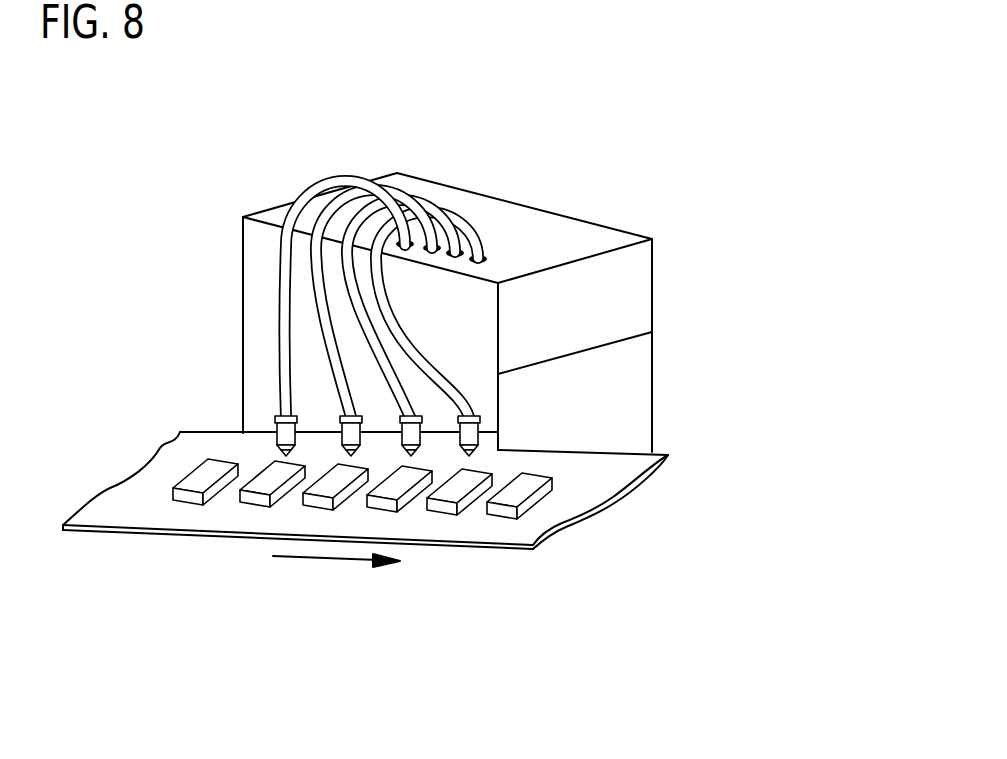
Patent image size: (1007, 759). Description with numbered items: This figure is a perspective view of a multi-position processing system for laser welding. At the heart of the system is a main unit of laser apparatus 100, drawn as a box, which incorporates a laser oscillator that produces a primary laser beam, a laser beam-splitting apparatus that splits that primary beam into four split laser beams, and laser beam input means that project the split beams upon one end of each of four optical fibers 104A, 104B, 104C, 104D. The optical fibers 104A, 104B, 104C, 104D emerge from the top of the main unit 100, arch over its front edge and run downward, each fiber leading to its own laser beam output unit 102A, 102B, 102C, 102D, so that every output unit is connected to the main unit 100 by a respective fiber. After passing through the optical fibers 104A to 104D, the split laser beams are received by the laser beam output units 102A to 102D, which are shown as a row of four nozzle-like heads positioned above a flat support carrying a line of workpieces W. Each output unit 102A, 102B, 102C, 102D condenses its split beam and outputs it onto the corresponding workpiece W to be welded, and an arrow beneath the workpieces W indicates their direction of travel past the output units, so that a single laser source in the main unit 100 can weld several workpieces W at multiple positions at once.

The main unit of laser apparatus 100 is at (593, 235).
The laser beam output unit 102A is at (276, 422).
The laser beam output unit 102B is at (340, 420).
The laser beam output unit 102C is at (422, 432).
The laser beam output unit 102D is at (482, 430).
The optical fiber 104A is at (280, 287).
The optical fiber 104B is at (320, 212).
The optical fiber 104C is at (345, 195).
The optical fiber 104D is at (468, 208).
The workpiece W is at (302, 507).